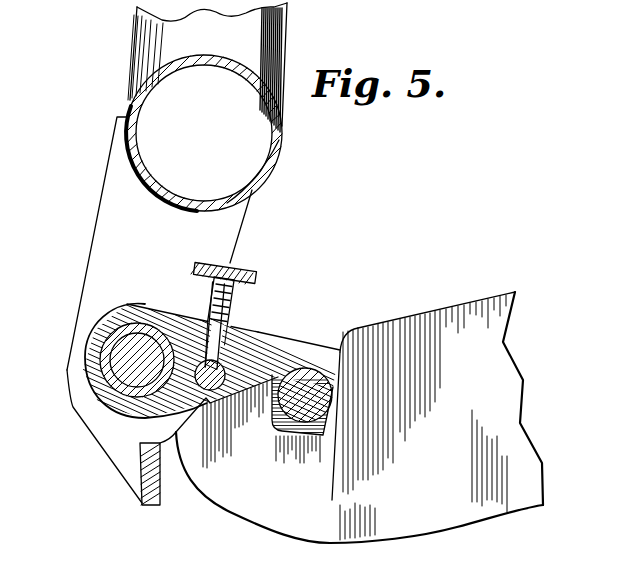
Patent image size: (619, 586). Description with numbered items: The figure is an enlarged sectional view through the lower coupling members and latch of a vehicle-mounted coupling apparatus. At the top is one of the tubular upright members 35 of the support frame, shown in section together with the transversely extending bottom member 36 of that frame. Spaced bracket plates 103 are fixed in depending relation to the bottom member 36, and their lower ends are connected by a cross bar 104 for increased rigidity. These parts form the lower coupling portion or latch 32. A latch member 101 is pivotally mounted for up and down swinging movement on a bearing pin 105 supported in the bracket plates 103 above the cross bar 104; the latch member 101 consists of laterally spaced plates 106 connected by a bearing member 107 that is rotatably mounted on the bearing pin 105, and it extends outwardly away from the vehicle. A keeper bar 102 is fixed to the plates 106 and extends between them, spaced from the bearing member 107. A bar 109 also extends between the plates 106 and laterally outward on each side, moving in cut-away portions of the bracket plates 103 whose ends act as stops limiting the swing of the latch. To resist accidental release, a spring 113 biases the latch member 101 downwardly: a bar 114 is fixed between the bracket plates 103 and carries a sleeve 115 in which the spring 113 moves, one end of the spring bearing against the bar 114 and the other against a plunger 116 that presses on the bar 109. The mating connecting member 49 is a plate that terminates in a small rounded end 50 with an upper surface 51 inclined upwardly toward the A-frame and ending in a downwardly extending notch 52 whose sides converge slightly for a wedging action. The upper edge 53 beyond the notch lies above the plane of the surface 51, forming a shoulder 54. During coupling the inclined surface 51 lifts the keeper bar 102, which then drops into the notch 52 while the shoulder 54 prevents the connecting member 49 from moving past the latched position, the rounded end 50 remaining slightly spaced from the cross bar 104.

The upright member 35 is at (276, 33).
The bottom member 36 is at (277, 137).
The bracket plate 103 is at (99, 259).
The lower coupling portion or latch 32 is at (67, 367).
The cross bar 104 is at (150, 505).
The bearing member 107 is at (122, 327).
The bearing pin 105 is at (110, 388).
The latch plate 106 is at (184, 324).
The latch member 101 is at (283, 333).
The bar 114 is at (248, 278).
The sleeve 115 is at (217, 290).
The spring 113 is at (237, 294).
The plunger 116 is at (228, 347).
The bar 109 is at (222, 372).
The notch or recess 52 is at (288, 428).
The keeper bar 102 is at (297, 387).
The upper surface 51 is at (207, 410).
The rounded end 50 is at (173, 460).
The shoulder 54 is at (340, 337).
The upper edge 53 is at (450, 308).
The connecting member 49 is at (500, 423).